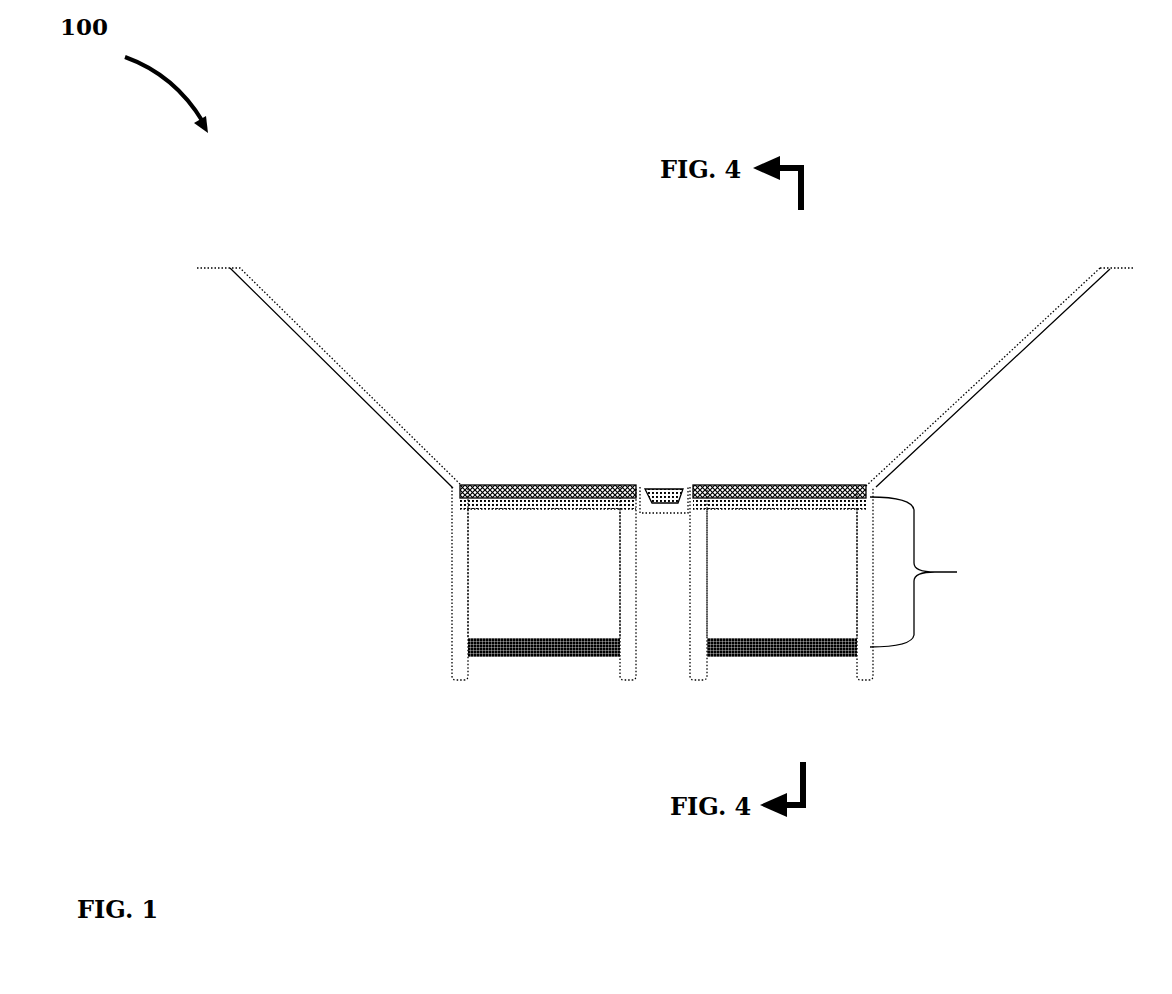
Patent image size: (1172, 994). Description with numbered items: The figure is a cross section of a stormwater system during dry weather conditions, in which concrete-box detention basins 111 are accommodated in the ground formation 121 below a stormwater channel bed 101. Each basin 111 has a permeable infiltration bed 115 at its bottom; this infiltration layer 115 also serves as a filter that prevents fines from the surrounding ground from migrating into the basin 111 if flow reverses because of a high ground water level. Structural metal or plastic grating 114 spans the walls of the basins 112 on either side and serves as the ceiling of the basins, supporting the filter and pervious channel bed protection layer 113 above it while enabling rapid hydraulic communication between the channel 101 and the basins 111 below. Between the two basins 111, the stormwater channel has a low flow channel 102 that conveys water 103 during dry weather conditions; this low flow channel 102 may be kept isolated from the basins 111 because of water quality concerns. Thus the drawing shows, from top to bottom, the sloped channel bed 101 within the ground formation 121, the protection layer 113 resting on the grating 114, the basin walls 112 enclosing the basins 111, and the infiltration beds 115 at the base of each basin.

The stormwater channel bed 101 is at (262, 296).
The low flow channel 102 is at (687, 487).
The water 103 is at (652, 487).
The concrete-box detention basin 111 is at (562, 612).
The walls of the basins 112 is at (622, 600).
The filter and pervious channel bed protection layer 113 is at (505, 487).
The structural grating 114 is at (512, 505).
The permeable infiltration bed 115 is at (500, 657).
The ground formation 121 is at (238, 542).